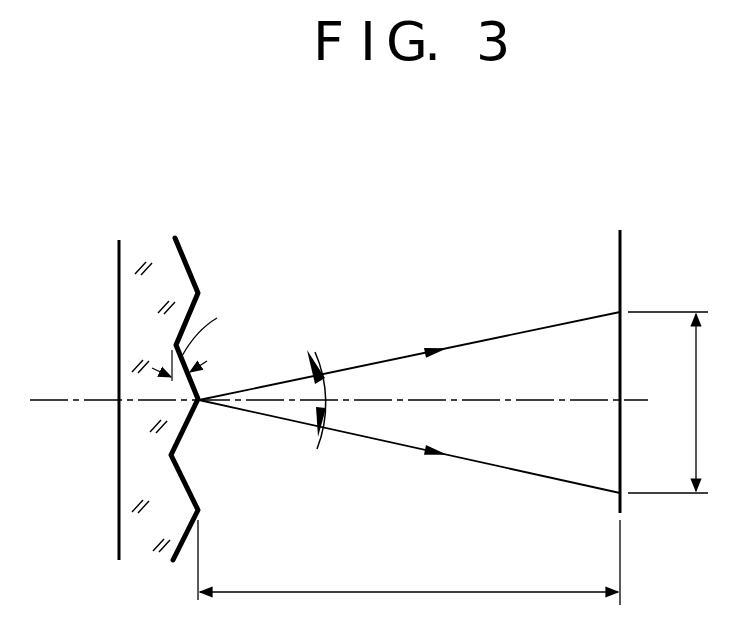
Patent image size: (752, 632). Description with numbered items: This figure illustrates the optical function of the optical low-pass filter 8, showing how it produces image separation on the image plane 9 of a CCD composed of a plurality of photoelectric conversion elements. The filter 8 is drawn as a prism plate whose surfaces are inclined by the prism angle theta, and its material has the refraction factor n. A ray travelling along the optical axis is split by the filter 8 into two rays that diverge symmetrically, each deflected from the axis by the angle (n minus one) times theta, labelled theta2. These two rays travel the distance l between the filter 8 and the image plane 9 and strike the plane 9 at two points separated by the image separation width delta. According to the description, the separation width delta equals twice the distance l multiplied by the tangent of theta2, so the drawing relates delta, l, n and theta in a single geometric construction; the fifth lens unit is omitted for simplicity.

The optical low-pass filter 8 is at (173, 355).
The image plane 9 is at (622, 245).
The refraction factor n is at (141, 464).
The prism angle theta is at (196, 340).
The deflection angle (n−1)θ theta2 is at (384, 399).
The image separation width delta is at (673, 402).
The distance between optical low-pass filter and image plane l is at (409, 562).